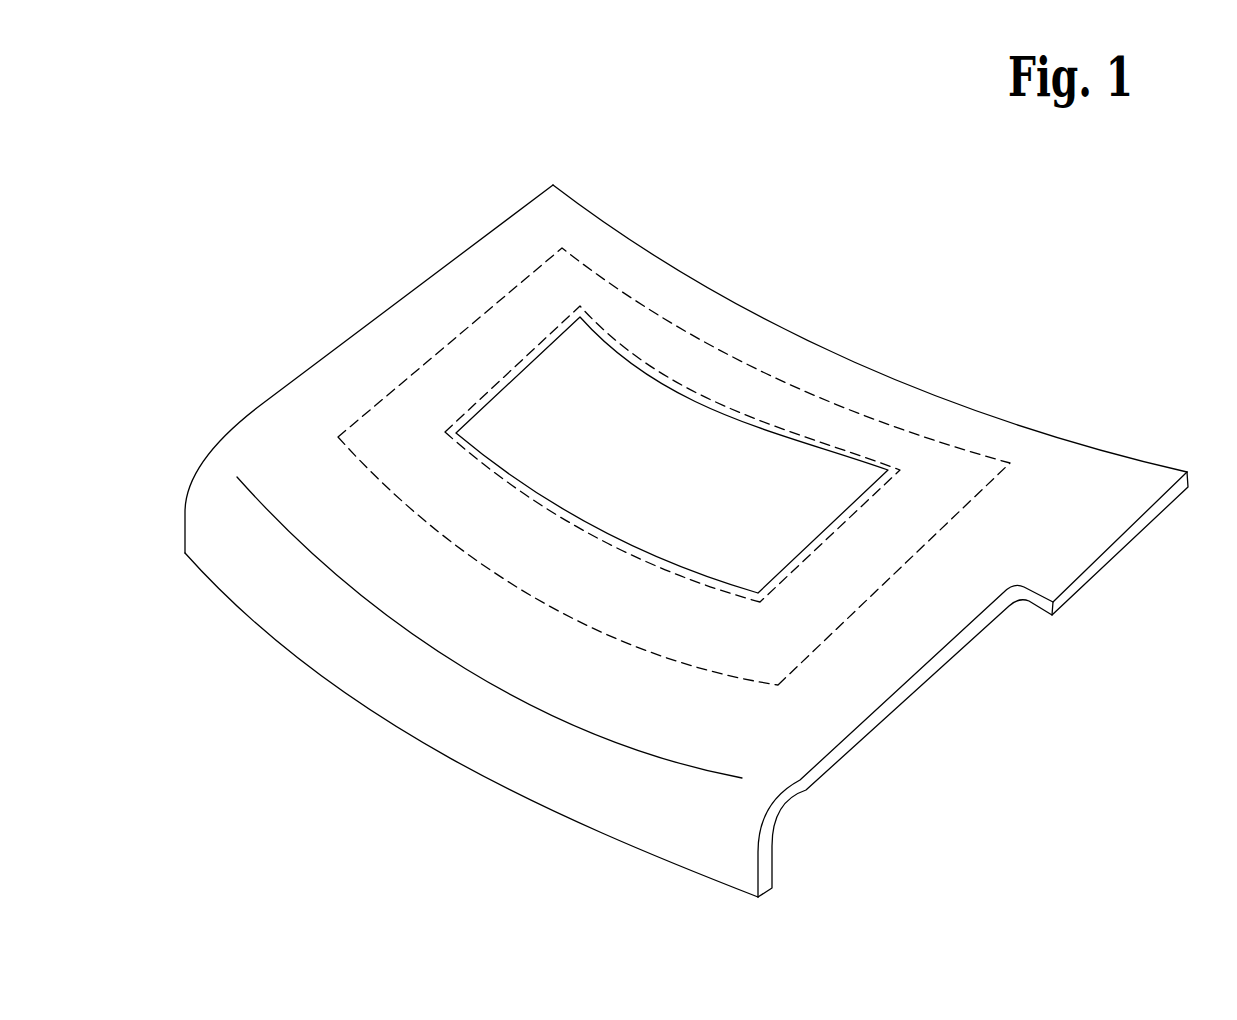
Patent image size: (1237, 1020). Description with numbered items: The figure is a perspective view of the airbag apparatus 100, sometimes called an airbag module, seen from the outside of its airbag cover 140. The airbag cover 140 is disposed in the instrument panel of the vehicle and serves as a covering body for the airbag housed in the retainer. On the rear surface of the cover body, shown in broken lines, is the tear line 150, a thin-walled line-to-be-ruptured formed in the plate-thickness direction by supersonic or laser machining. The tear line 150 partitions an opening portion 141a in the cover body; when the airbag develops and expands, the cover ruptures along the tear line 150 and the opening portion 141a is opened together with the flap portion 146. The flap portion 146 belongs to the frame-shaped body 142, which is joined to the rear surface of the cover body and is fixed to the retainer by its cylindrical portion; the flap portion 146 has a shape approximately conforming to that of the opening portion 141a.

The airbag apparatus 100 is at (704, 204).
The airbag cover 140 is at (936, 381).
The opening portion 141a is at (672, 413).
The flap portion 146 is at (725, 427).
The frame-shaped body 142 is at (485, 313).
The tear line 150 is at (557, 517).